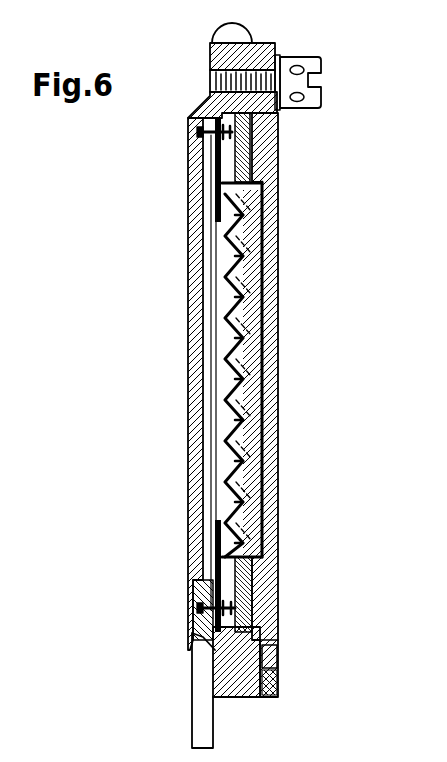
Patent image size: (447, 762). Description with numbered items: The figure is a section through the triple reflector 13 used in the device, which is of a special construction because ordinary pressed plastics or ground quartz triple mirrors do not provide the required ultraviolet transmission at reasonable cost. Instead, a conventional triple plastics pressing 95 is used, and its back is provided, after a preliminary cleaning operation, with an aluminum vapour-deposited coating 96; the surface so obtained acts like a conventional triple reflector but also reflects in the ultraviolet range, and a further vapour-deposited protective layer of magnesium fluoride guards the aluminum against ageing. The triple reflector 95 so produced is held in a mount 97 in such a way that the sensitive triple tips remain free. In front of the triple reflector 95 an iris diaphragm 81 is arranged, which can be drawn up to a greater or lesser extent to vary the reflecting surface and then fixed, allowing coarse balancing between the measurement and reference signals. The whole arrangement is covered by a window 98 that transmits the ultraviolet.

The triple reflector 13 is at (278, 288).
The iris diaphragm 81 is at (220, 204).
The triple plastics pressing 95 is at (266, 232).
The aluminum vapour-deposited coating 96 is at (222, 314).
The mount 97 is at (262, 133).
The window 98 is at (196, 433).